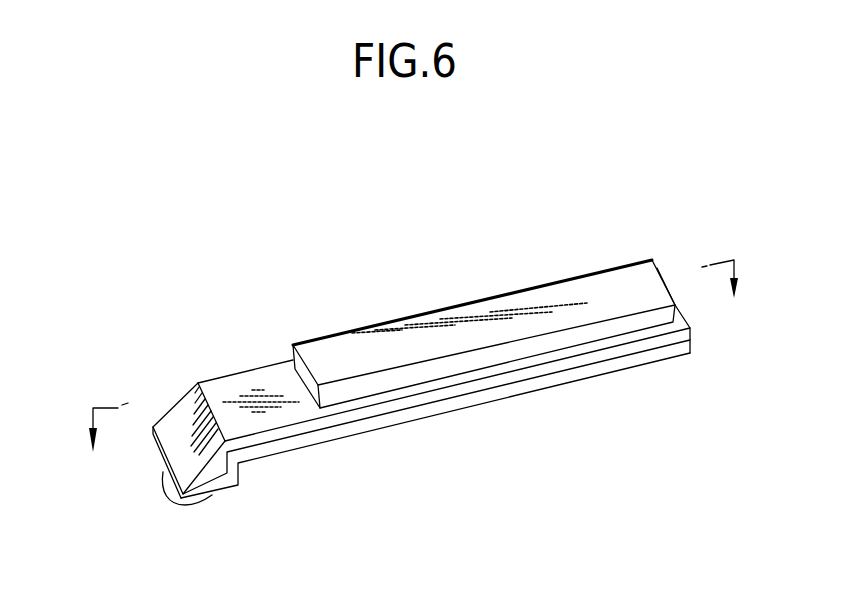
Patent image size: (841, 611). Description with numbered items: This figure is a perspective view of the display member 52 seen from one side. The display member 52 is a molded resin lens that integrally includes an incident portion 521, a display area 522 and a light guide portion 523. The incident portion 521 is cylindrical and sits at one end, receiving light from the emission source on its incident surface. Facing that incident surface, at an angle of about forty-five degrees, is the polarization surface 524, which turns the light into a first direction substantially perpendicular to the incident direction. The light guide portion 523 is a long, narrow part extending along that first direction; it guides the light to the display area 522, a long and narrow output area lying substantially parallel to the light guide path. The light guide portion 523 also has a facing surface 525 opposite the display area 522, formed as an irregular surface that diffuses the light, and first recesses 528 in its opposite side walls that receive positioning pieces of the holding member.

The display member 52 is at (392, 270).
The incident portion 521 is at (208, 503).
The display area 522 is at (558, 295).
The light guide portion 523 is at (257, 364).
The polarization surface 524 is at (184, 440).
The facing surface 525 is at (378, 430).
The first recesses 528 is at (465, 408).